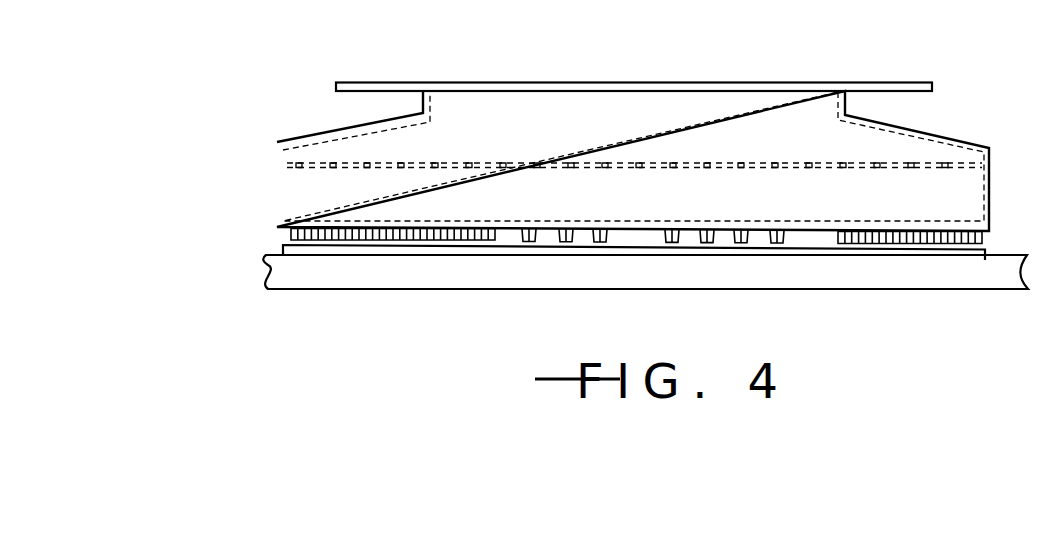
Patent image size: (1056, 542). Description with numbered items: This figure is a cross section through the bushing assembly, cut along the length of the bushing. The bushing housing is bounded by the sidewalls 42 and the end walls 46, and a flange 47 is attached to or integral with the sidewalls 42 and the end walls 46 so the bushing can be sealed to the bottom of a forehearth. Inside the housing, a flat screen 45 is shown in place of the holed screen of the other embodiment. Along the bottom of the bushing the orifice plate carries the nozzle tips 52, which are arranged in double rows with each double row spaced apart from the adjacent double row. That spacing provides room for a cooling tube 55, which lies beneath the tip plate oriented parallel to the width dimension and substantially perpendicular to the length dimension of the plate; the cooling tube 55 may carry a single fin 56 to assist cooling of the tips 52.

The sidewalls 42 is at (311, 135).
The flat screen 45 is at (528, 162).
The end walls 46 is at (680, 140).
The flange 47 is at (362, 82).
The tips 52 is at (472, 229).
The cooling tube 55 is at (745, 273).
The single fin 56 is at (944, 251).